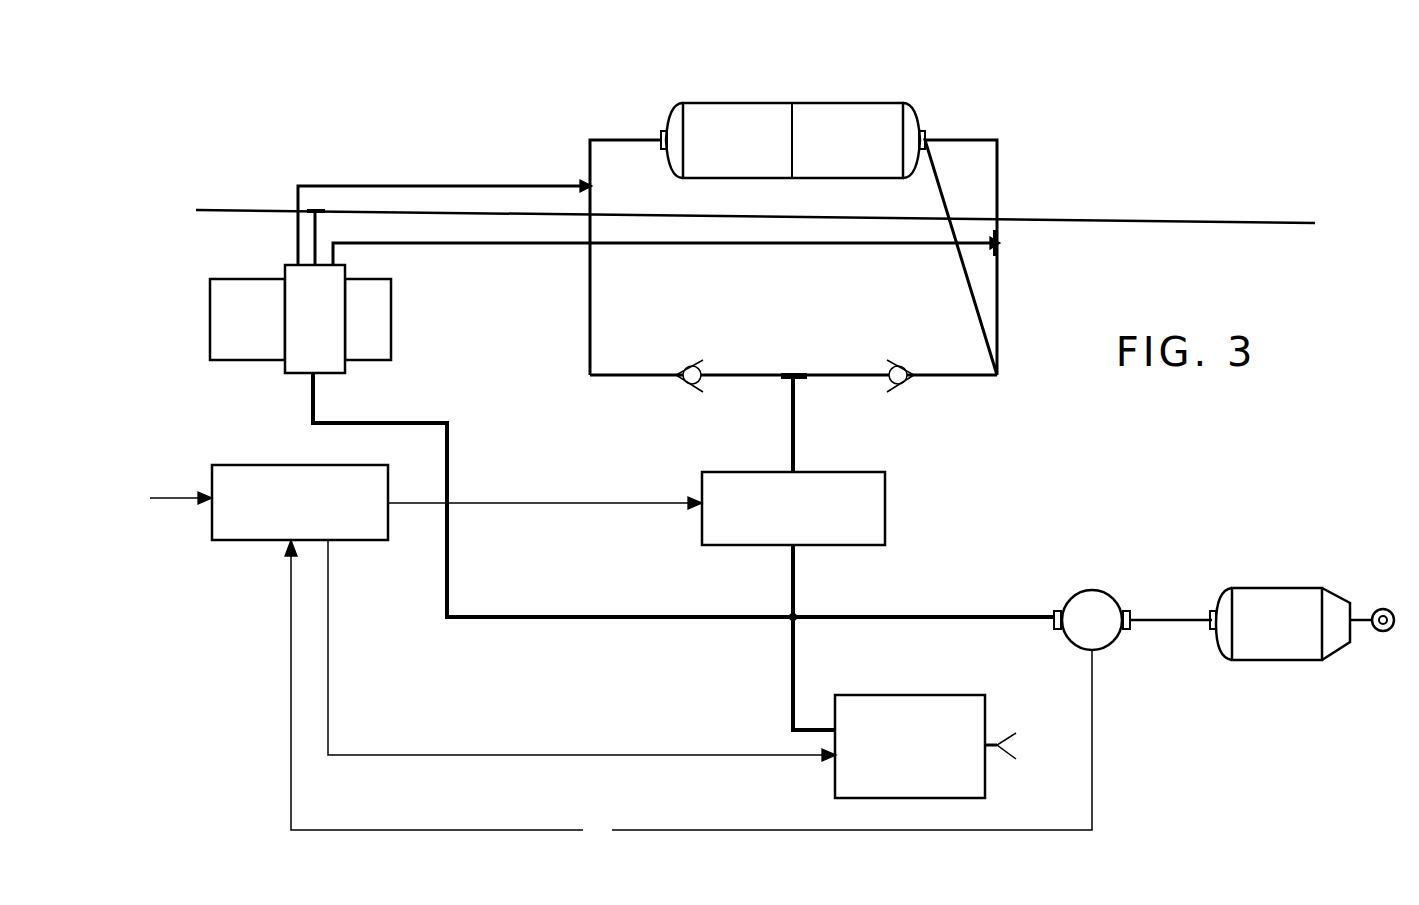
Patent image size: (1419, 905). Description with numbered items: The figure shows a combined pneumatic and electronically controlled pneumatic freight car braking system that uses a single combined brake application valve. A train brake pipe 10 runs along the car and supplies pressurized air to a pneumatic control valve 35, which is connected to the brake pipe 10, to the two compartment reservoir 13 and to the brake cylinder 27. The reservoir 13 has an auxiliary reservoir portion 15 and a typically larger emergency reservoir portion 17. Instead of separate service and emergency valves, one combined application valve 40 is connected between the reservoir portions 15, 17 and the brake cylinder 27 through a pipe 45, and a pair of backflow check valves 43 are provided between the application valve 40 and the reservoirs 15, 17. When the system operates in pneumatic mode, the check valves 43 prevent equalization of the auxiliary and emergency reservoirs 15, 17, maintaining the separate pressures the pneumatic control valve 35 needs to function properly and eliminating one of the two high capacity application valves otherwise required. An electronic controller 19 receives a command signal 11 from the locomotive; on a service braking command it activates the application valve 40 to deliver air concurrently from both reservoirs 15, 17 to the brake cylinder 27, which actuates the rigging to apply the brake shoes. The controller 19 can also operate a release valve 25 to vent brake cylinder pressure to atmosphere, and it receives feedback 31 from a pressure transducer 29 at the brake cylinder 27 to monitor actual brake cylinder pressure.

The train brake pipe 10 is at (1094, 222).
The command signal 11 is at (172, 500).
The two compartment reservoir 13 is at (763, 106).
The auxiliary reservoir portion 15 is at (745, 103).
The emergency reservoir portion 17 is at (840, 103).
The electronic controller 19 is at (272, 465).
The release valve 25 is at (922, 695).
The brake cylinder 27 is at (1284, 589).
The pressure transducer 29 is at (1086, 592).
The feedback 31 is at (1092, 787).
The pneumatic control valve 35 is at (284, 268).
The combined brake application valve 40 is at (762, 472).
The backflow check valves 43 is at (692, 366).
The supply pipe 45 is at (798, 382).